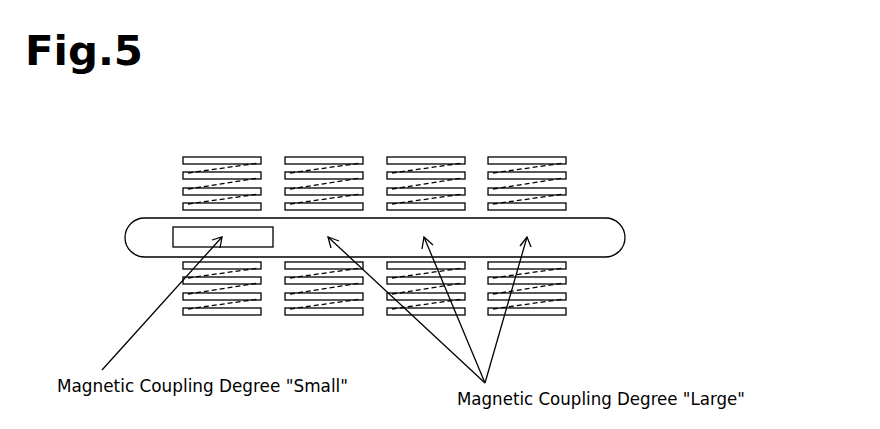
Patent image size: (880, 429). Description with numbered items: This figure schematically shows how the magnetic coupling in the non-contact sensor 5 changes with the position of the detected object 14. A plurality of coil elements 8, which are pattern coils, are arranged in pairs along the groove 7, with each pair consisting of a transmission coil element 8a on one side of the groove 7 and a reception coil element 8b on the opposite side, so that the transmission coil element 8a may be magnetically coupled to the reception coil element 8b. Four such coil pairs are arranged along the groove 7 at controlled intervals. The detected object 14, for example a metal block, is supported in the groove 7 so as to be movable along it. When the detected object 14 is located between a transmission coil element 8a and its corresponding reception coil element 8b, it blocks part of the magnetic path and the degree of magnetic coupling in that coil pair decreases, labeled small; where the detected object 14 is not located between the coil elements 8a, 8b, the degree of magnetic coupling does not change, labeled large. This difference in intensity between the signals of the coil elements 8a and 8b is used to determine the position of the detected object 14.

The non-contact sensor 5 is at (147, 149).
The groove 7 is at (153, 218).
The detected object 14 is at (173, 237).
The coil elements 8 is at (383, 244).
The transmission coil element 8a is at (197, 157).
The reception coil element 8b is at (197, 316).